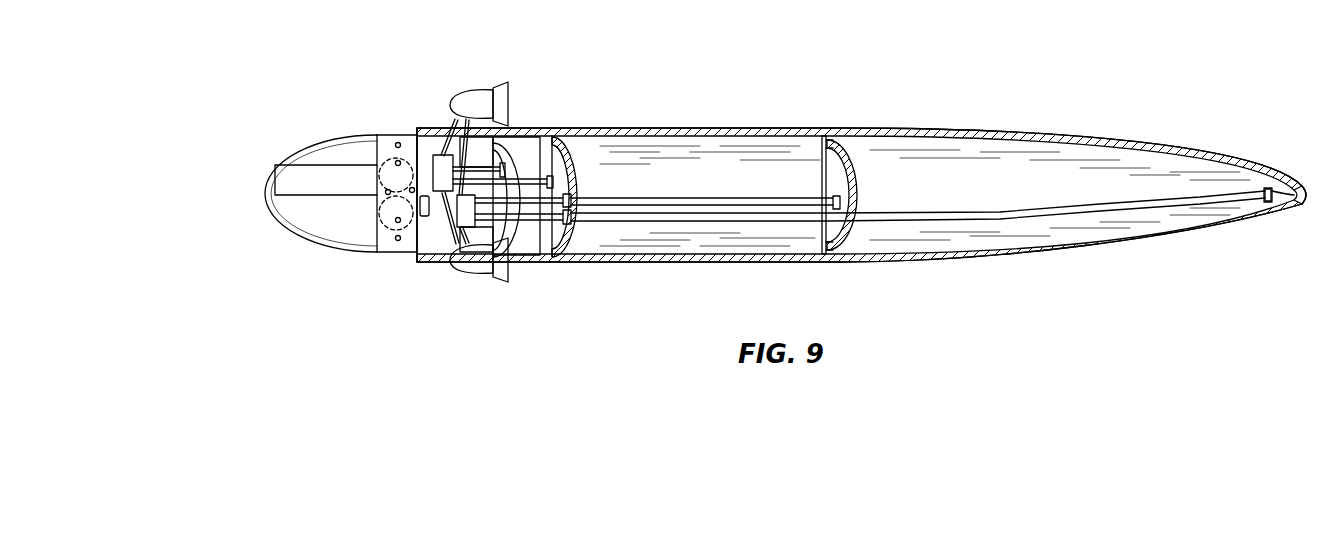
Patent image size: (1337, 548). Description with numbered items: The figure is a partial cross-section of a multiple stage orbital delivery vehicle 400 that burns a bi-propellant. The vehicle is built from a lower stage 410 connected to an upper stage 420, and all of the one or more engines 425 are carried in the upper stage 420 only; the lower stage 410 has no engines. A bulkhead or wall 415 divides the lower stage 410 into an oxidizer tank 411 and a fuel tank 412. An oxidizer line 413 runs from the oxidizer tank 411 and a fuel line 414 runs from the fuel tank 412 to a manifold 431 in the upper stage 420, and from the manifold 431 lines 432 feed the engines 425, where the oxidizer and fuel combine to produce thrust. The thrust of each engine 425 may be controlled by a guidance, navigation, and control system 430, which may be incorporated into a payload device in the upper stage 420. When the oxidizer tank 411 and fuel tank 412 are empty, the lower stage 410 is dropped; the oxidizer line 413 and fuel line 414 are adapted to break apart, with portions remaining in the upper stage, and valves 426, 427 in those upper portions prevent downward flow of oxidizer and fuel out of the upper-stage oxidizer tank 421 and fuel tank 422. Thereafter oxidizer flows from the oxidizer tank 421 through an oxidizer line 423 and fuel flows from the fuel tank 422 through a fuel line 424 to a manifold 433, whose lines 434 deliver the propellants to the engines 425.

The multiple stage orbital delivery vehicle 400 is at (233, 63).
The lower stage 410 is at (1017, 123).
The oxidizer tank 411 is at (716, 152).
The fuel tank 412 is at (1092, 222).
The oxidizer line 413 is at (752, 203).
The fuel line 414 is at (1233, 192).
The bulkhead 415 is at (848, 222).
The upper stage 420 is at (290, 142).
The oxidizer tank 421 is at (482, 240).
The fuel tank 422 is at (527, 243).
The oxidizer line 423 is at (486, 167).
The fuel line 424 is at (534, 183).
The engine 425 is at (477, 94).
The valve 426 is at (573, 196).
The valve 427 is at (573, 219).
The guidance, navigation, and control system 430 is at (418, 207).
The manifold 431 is at (428, 238).
The lines 432 is at (448, 128).
The manifold 433 is at (434, 178).
The lines 434 is at (440, 152).